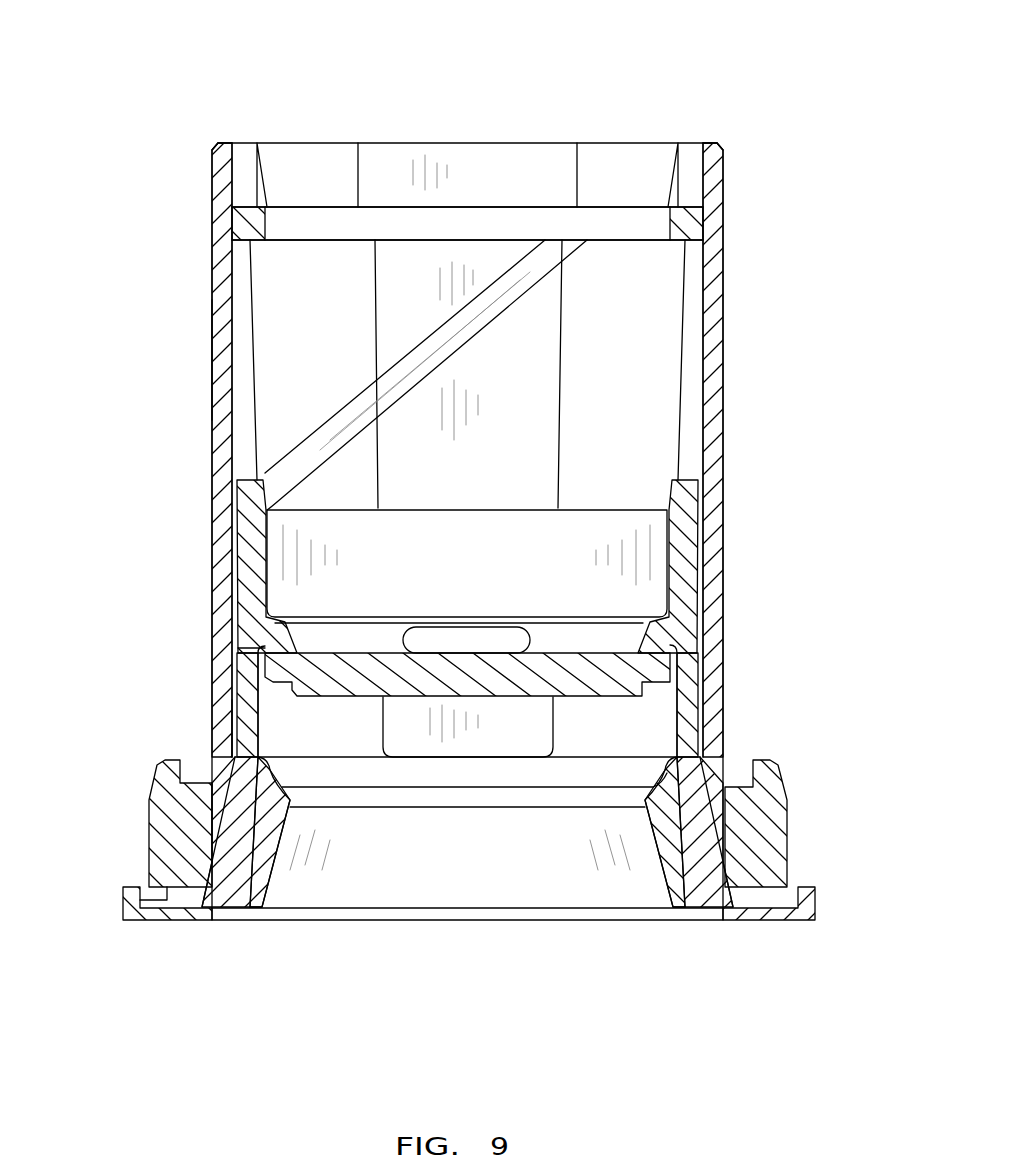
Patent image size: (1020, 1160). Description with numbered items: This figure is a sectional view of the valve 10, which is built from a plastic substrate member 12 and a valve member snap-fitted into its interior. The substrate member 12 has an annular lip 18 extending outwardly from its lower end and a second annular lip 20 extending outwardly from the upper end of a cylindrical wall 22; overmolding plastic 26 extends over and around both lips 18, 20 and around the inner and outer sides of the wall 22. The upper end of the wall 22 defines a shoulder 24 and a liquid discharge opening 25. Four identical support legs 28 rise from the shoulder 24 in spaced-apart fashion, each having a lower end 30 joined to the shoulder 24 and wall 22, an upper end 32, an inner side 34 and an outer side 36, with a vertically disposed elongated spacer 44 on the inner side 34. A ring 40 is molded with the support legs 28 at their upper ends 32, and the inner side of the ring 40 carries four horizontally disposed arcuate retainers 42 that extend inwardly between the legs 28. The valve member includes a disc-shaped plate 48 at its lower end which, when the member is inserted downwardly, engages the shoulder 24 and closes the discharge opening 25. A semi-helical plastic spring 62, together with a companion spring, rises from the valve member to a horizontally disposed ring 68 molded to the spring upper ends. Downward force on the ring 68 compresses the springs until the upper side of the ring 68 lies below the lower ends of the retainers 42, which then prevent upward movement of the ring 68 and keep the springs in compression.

The valve 10 is at (788, 370).
The plastic substrate member 12 is at (738, 323).
The annular lip 18 is at (177, 893).
The annular lip 20 is at (172, 770).
The cylindrical wall 22 is at (713, 848).
The shoulder 24 is at (247, 787).
The liquid discharge opening 25 is at (580, 838).
The overmolding plastic 26 is at (779, 823).
The support legs 28 is at (210, 475).
The lower end of support leg 30 is at (222, 748).
The upper end of support leg 32 is at (213, 150).
The inner side of support leg 34 is at (233, 410).
The outer side of support leg 36 is at (213, 358).
The ring 40 is at (725, 183).
The arcuate retainers 42 is at (263, 180).
The spacer 44 is at (243, 322).
The disc-shaped plate 48 is at (610, 665).
The semi-helical plastic spring 62 is at (507, 269).
The ring 68 is at (542, 218).